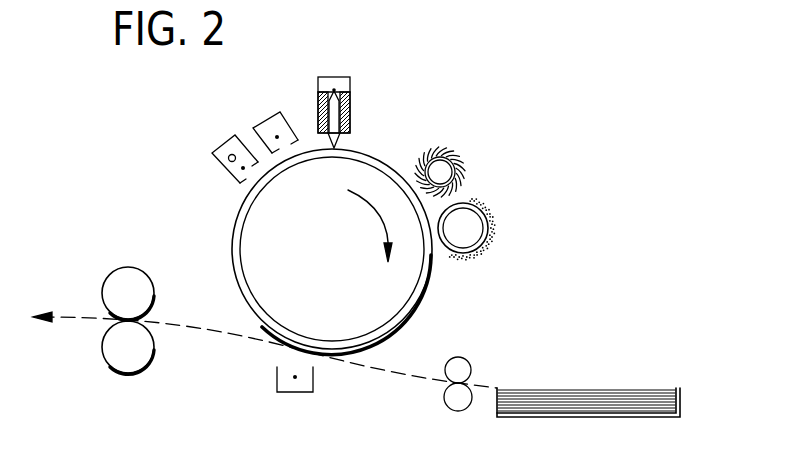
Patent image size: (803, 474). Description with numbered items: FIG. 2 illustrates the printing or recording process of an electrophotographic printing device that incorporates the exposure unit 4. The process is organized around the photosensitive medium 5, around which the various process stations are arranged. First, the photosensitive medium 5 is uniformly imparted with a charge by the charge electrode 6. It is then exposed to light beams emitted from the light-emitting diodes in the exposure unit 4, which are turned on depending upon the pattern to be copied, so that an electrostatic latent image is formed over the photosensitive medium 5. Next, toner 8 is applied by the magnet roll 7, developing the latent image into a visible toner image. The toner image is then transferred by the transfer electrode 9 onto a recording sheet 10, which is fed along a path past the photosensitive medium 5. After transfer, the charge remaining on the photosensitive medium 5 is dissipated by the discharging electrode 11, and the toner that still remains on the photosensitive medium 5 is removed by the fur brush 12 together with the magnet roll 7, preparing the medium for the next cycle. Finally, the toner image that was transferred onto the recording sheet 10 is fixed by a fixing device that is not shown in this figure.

The exposure unit 4 is at (352, 108).
The photosensitive medium 5 is at (381, 157).
The charge electrode 6 is at (270, 127).
The magnet roll 7 is at (470, 232).
The toner 8 is at (478, 207).
The transfer electrode 9 is at (296, 392).
The recording sheet 10 is at (588, 388).
The discharging electrode 11 is at (226, 148).
The fur brush 12 is at (458, 160).